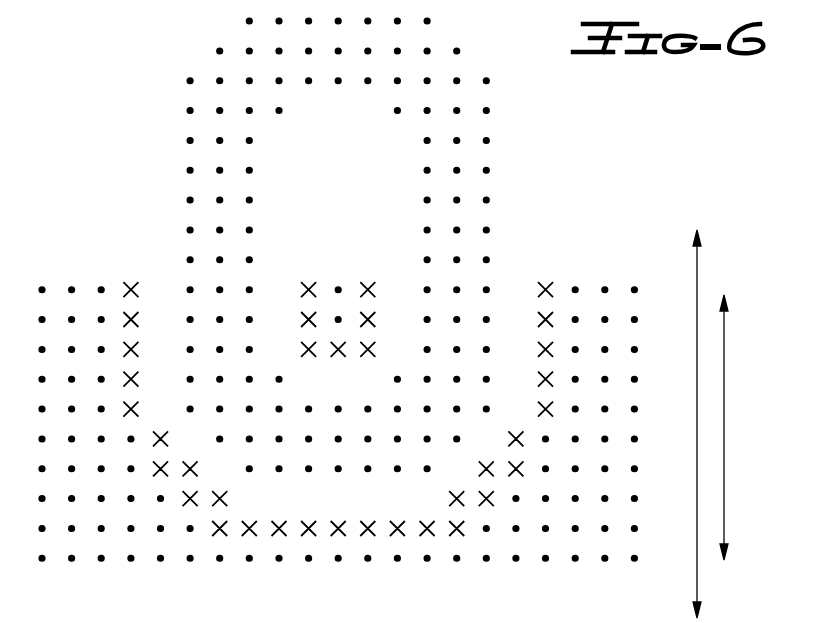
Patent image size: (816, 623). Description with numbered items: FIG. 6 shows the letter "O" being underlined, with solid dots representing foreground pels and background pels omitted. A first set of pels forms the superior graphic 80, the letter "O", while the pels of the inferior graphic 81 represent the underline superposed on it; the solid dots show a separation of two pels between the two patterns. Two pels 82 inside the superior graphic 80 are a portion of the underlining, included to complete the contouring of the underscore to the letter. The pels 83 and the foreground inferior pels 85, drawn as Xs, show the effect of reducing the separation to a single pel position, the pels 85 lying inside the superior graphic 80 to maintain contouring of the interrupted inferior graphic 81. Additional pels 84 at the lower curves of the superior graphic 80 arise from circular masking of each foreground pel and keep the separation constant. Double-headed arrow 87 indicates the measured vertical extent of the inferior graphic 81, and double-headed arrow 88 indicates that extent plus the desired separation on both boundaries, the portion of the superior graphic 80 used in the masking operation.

The superior graphic 80 is at (180, 195).
The inferior graphic 81 is at (43, 270).
The pels inside the graphic pattern 82 is at (339, 317).
The pels 83 is at (134, 318).
The additional pels 84 is at (246, 498).
The foreground inferior pels 85 is at (305, 310).
The double-headed arrow 87 is at (725, 365).
The double-headed arrow 88 is at (697, 443).